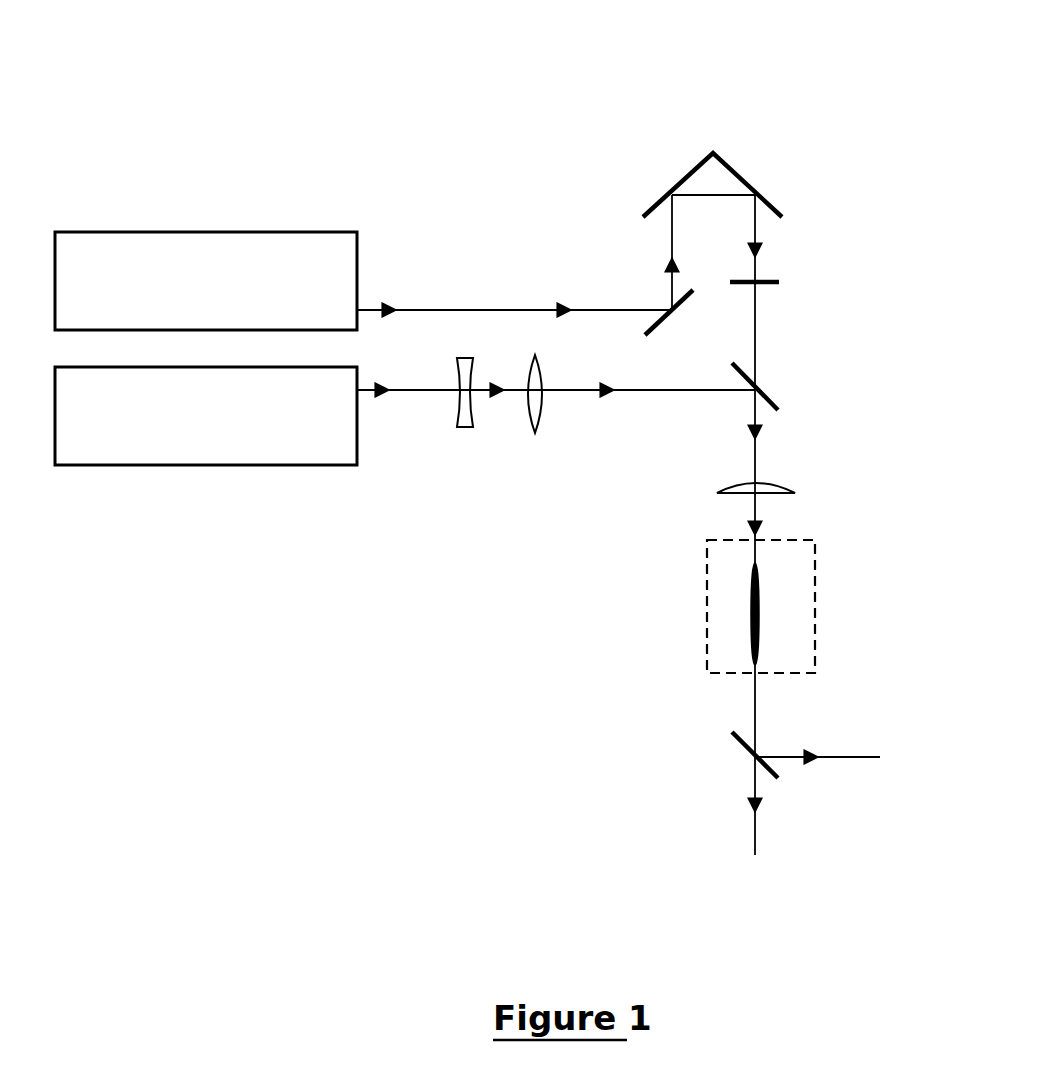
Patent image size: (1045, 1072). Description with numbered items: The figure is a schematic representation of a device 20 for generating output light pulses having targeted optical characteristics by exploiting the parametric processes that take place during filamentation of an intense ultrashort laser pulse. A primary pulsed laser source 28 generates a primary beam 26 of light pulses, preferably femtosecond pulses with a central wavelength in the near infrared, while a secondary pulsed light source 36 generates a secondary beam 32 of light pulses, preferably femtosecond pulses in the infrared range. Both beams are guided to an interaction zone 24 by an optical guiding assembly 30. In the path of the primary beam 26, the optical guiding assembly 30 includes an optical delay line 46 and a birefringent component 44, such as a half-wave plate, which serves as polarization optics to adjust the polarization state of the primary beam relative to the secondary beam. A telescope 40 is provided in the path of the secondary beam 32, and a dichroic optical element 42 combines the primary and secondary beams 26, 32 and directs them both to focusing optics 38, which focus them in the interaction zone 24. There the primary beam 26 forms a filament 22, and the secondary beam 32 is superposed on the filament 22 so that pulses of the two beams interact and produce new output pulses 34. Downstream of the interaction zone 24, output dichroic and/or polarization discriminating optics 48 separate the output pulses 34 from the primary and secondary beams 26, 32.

The device 20 is at (283, 76).
The filament 22 is at (775, 658).
The interaction zone 24 is at (825, 540).
The primary beam 26 is at (480, 309).
The primary pulsed laser source 28 is at (205, 232).
The optical guiding assembly 30 is at (574, 195).
The secondary beam 32 is at (580, 392).
The output pulses 34 is at (868, 757).
The secondary pulsed light source 36 is at (203, 467).
The focusing optics 38 is at (800, 490).
The telescope 40 is at (567, 440).
The dichroic optical element 42 is at (788, 405).
The birefringent component 44 is at (789, 284).
The optical delay line 46 is at (713, 150).
The output dichroic and/or polarization discriminating optics 48 is at (730, 731).